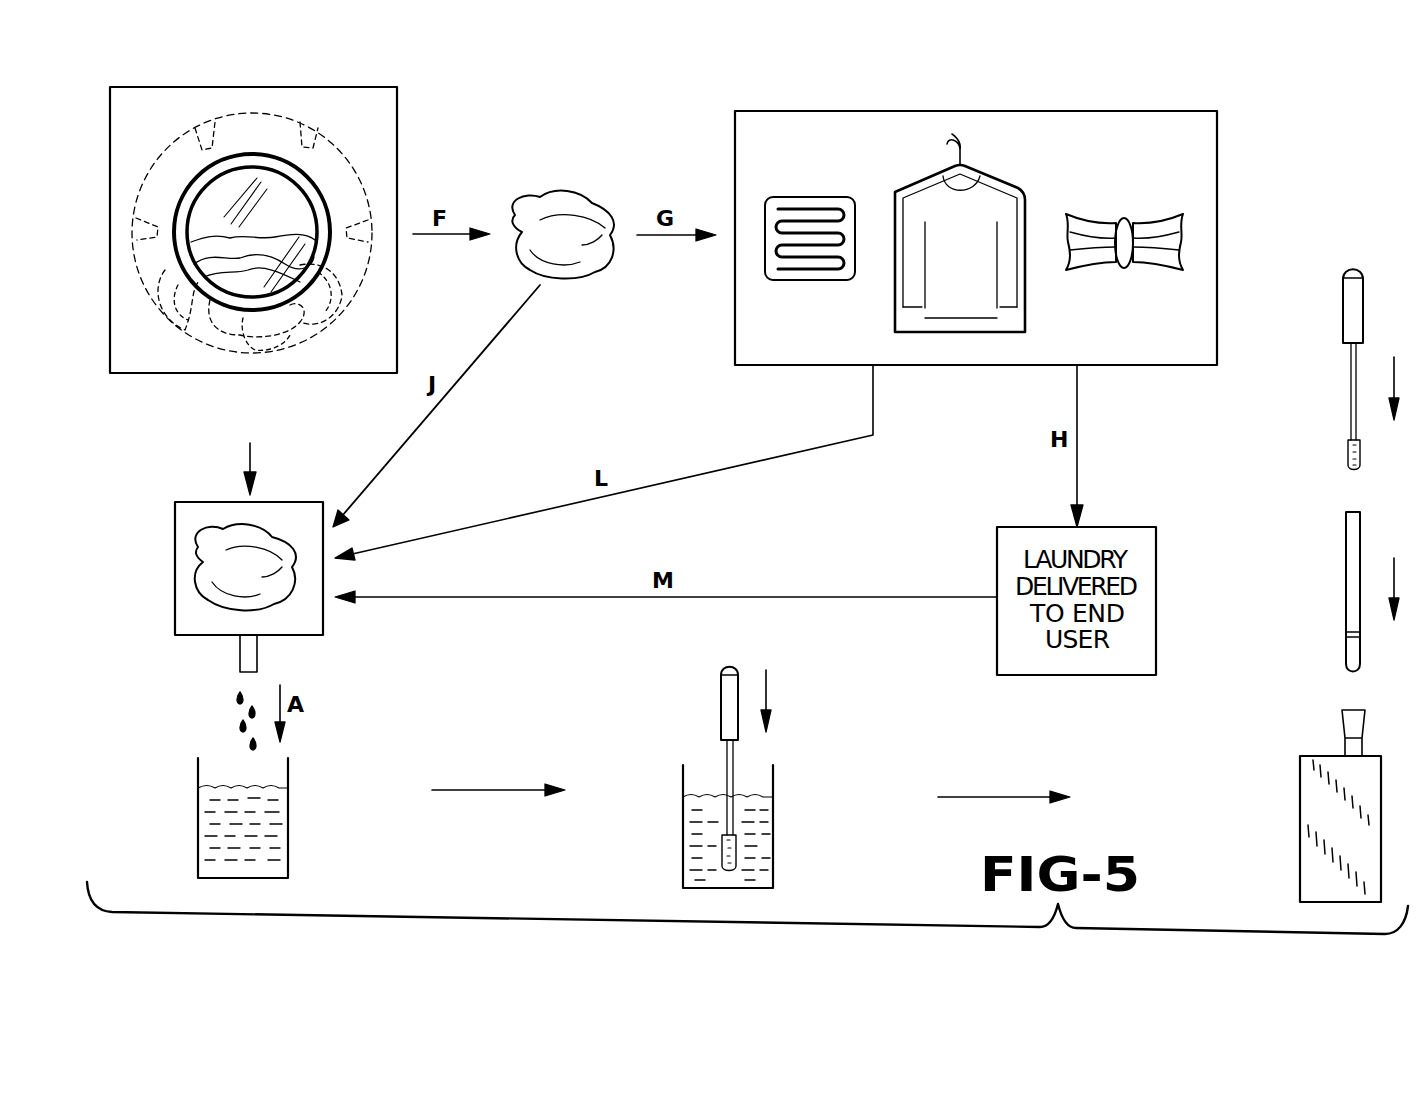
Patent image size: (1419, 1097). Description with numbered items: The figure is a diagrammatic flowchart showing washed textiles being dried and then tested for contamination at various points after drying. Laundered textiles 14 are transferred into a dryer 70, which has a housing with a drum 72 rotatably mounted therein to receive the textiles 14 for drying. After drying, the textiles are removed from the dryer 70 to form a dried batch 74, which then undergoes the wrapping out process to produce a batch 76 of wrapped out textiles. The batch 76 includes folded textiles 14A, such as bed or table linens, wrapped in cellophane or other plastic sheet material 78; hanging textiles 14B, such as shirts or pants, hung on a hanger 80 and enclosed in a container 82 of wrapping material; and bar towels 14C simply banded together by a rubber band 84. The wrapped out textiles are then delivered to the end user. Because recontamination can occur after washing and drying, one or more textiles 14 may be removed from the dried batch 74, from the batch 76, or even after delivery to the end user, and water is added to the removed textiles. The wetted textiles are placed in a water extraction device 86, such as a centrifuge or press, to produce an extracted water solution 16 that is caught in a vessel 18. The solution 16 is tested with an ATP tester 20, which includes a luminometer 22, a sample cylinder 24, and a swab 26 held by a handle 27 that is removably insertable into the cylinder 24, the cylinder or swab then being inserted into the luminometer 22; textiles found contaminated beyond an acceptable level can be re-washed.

The textiles 14 is at (268, 275).
The dryer 70 is at (397, 143).
The drum 72 is at (372, 180).
The dried batch 74 is at (600, 196).
The batch of wrapped out textiles 76 is at (1086, 110).
The plastic sheet material 78 is at (800, 196).
The hanger 80 is at (958, 138).
The container 82 is at (1027, 322).
The rubber band 84 is at (1128, 220).
The folded textiles 14A is at (803, 268).
The hanging textiles 14B is at (1000, 192).
The bar towels 14C is at (1150, 268).
The water extraction device 86 is at (208, 500).
The extracted water solution 16 is at (238, 728).
The vessel 18 is at (290, 832).
The handle 27 is at (720, 705).
The swab 26 is at (722, 845).
The sample cylinder 24 is at (1346, 568).
The ATP tester 20 is at (1280, 806).
The luminometer 22 is at (1300, 800).